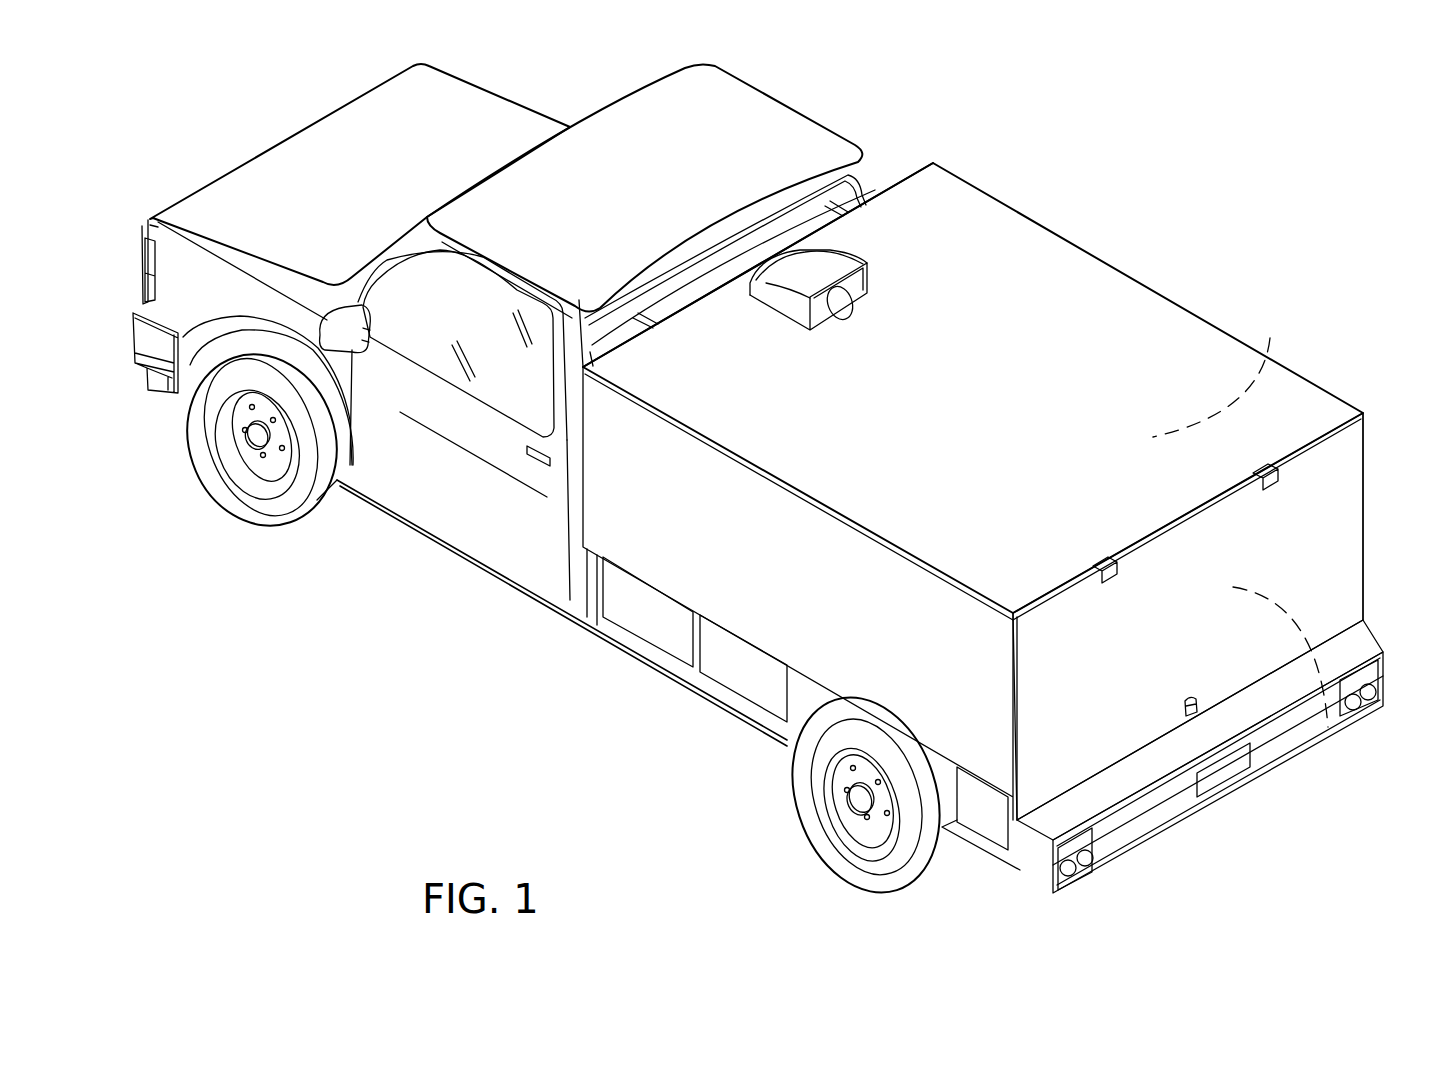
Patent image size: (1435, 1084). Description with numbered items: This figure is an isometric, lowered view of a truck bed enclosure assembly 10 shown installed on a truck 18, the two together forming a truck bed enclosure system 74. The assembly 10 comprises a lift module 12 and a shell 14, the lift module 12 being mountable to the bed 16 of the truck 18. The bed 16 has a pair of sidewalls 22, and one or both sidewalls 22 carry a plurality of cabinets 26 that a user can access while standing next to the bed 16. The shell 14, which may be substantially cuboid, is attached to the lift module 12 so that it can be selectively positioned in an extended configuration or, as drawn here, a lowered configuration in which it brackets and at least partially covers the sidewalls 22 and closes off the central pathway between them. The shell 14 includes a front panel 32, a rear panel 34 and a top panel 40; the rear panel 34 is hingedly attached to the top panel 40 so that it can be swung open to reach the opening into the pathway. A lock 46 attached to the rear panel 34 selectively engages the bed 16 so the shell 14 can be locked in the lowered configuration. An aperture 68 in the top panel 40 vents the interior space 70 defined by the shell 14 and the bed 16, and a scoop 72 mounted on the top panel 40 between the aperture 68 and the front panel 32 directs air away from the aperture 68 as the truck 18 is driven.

The truck bed enclosure assembly 10 is at (1092, 150).
The lift module 12 is at (1328, 727).
The shell 14 is at (1083, 250).
The bed 16 is at (870, 810).
The truck 18 is at (737, 100).
The sidewalls 22 is at (793, 683).
The cabinets 26 is at (655, 617).
The front panel 32 is at (903, 173).
The rear panel 34 is at (1327, 513).
The top panel 40 is at (1137, 340).
The lock 46 is at (1190, 713).
The aperture 68 is at (830, 307).
The interior space 70 is at (1260, 360).
The scoop 72 is at (840, 263).
The truck bed enclosure system 74 is at (1141, 185).